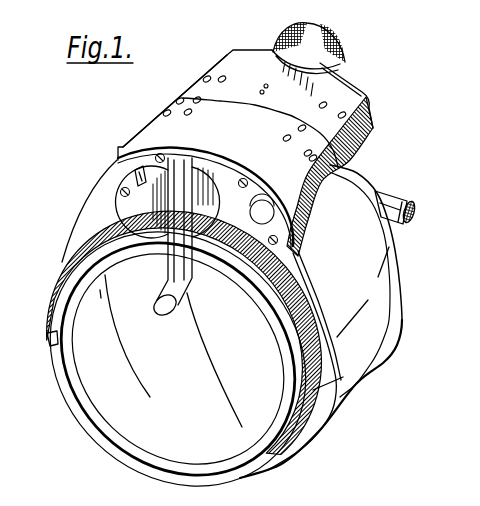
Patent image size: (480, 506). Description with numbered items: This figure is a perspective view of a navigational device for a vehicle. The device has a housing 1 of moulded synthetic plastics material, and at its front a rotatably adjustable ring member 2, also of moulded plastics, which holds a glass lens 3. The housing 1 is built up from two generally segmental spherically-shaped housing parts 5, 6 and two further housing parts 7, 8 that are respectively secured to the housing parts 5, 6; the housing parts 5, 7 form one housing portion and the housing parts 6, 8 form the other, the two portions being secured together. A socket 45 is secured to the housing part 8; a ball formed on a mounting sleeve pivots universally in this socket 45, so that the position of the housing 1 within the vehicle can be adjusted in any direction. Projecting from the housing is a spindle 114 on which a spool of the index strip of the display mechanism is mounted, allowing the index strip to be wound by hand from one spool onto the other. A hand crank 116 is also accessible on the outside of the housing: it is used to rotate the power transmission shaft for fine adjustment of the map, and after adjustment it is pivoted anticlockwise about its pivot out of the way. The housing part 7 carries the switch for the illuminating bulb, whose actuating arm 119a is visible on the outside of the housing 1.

The housing 1 is at (399, 337).
The ring member 2 is at (283, 457).
The glass lens 3 is at (87, 378).
The housing part 5 is at (355, 385).
The housing part 6 is at (395, 257).
The housing part 7 is at (148, 125).
The housing part 8 is at (222, 58).
The socket 45 is at (328, 45).
The spindle 114 is at (387, 202).
The hand crank 116 is at (90, 275).
The actuating arm 119a is at (138, 172).